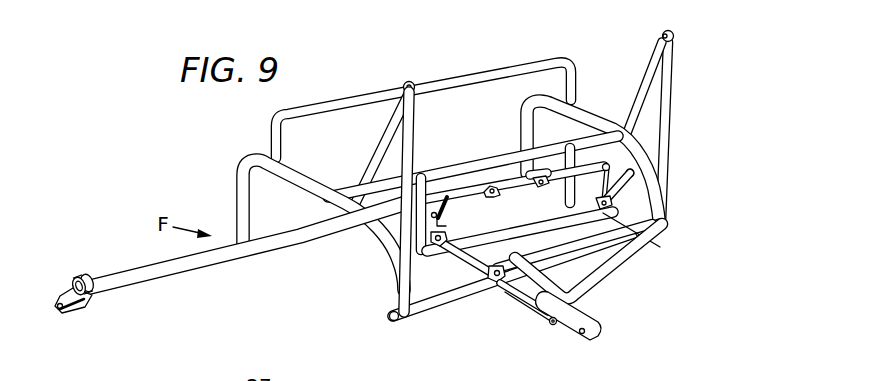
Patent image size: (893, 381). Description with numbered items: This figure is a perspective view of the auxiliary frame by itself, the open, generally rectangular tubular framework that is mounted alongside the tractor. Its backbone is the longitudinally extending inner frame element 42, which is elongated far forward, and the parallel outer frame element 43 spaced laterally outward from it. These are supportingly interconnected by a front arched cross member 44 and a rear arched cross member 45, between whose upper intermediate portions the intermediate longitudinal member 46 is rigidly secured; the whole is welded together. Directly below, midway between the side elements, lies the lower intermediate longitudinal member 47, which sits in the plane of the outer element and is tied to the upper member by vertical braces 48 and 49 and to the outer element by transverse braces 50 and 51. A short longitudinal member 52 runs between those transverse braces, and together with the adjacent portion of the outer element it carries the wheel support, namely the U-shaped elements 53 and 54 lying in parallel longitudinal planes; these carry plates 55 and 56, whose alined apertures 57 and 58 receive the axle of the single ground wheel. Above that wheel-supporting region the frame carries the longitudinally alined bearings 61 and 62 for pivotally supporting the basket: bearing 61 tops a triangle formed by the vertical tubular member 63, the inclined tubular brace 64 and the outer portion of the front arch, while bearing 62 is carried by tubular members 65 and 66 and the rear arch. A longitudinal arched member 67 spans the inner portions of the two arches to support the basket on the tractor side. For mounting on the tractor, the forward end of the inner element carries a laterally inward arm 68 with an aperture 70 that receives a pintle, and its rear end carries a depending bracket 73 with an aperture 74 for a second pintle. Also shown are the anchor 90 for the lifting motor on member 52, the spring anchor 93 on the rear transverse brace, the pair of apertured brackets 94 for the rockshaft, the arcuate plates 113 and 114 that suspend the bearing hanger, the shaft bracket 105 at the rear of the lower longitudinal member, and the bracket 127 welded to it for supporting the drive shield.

The inner frame element 42 is at (164, 273).
The outer frame element 43 is at (436, 304).
The front arched cross member 44 is at (247, 172).
The rear arched cross member 45 is at (587, 110).
The intermediate longitudinal member 46 is at (467, 165).
The intermediate longitudinal member 47 is at (523, 221).
The vertical brace 48 is at (423, 176).
The vertical brace 49 is at (576, 175).
The transverse brace 50 is at (456, 256).
The transverse brace 51 is at (650, 237).
The longitudinal member 52 is at (478, 258).
The U-shaped element 53 is at (507, 290).
The U-shaped element 54 is at (614, 262).
The plate 55 is at (543, 310).
The plate 56 is at (588, 318).
The aperture 57 is at (554, 327).
The aperture 58 is at (585, 336).
The bearing 61 is at (409, 81).
The bearing 62 is at (667, 30).
The vertical tubular member 63 is at (414, 122).
The tubular brace 64 is at (395, 130).
The tubular member 65 is at (670, 80).
The tubular member 66 is at (651, 75).
The longitudinal arched member 67 is at (333, 105).
The arm 68 is at (73, 313).
The aperture 70 is at (60, 308).
The depending bracket 73 is at (448, 207).
The aperture 74 is at (448, 226).
The anchor 90 is at (599, 198).
The anchor 93 is at (612, 207).
The apertured bracket 94 is at (437, 246).
The bracket 105 is at (636, 171).
The arcuate plate 113 is at (491, 199).
The arcuate plate 114 is at (535, 182).
The bracket 127 is at (612, 163).